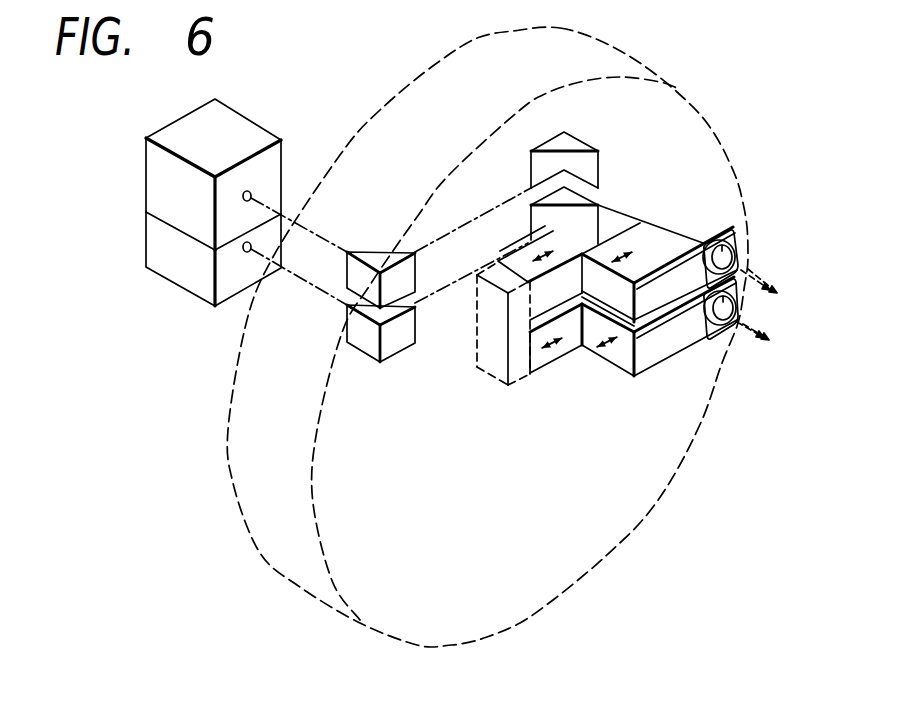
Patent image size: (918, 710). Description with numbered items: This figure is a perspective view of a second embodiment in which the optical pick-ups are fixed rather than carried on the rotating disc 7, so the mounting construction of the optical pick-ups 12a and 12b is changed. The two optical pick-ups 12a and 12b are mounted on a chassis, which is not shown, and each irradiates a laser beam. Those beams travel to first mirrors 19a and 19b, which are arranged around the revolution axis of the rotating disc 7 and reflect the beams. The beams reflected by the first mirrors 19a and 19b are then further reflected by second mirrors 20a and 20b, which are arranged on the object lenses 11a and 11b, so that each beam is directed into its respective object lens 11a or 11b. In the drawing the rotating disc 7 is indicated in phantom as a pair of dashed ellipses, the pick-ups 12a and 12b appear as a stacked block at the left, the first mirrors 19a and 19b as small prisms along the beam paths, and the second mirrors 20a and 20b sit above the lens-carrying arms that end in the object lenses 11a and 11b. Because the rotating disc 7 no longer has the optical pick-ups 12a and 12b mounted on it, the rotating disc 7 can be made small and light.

The rotating disc 7 is at (592, 53).
The object lens 11a is at (735, 335).
The object lens 11b is at (737, 240).
The optical pick-up 12a is at (157, 253).
The optical pick-up 12b is at (153, 173).
The first mirror 19a is at (395, 347).
The first mirror 19b is at (372, 258).
The second mirror 20a is at (583, 213).
The second mirror 20b is at (587, 163).